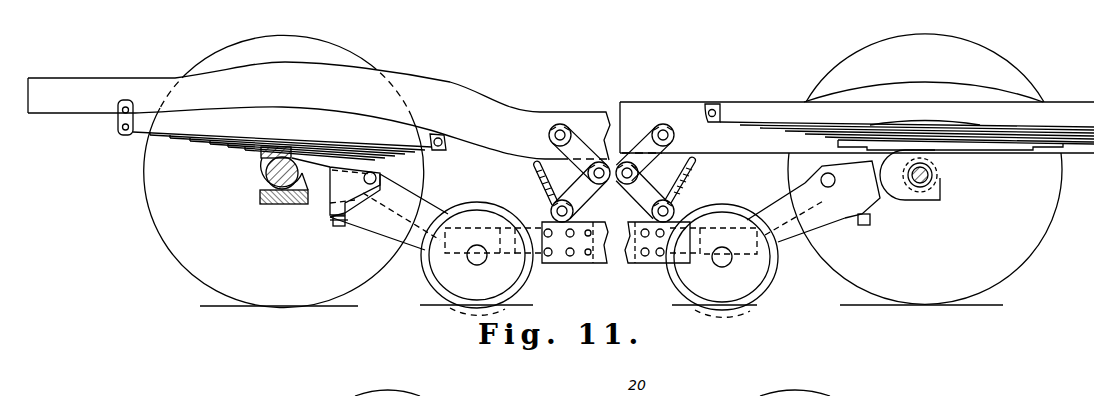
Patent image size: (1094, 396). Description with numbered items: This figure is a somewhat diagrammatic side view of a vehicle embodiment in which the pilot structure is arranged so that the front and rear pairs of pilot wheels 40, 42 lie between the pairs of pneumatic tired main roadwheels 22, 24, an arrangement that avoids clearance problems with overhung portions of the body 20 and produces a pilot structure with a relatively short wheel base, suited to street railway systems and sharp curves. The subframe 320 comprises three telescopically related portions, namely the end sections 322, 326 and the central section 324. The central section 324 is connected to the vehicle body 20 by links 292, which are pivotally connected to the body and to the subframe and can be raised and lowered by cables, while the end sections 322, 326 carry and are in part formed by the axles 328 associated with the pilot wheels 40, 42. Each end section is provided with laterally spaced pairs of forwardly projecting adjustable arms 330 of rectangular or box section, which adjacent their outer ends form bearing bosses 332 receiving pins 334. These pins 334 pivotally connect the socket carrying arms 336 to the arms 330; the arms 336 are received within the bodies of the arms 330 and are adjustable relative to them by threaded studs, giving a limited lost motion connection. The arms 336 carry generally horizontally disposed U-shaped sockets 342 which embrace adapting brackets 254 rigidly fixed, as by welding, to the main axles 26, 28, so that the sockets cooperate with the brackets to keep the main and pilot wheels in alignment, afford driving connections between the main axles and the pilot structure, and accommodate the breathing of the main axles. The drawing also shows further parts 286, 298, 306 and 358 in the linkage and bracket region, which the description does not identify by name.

The body 20 is at (478, 102).
The main roadwheels 22 is at (232, 298).
The main roadwheels 24 is at (1015, 270).
The main axle 26 is at (262, 172).
The main axle 28 is at (940, 180).
The pilot wheels 40 is at (447, 295).
The pilot wheels 42 is at (770, 290).
The adapting brackets 254 is at (305, 167).
The bolts 286 is at (570, 256).
The links 292 is at (650, 135).
The connecting rods 298 is at (531, 168).
The saddle bracket 306 is at (260, 191).
The subframe 320 is at (604, 264).
The end section 322 is at (533, 228).
The central section 324 is at (600, 222).
The end section 326 is at (718, 223).
The axles 328 is at (478, 262).
The adjustable arms 330 is at (418, 222).
The bearing bosses 332 is at (393, 199).
The pins 334 is at (370, 184).
The socket carrying arms 336 is at (378, 176).
The U-shaped sockets 342 is at (281, 148).
The lock nut 358 is at (330, 220).